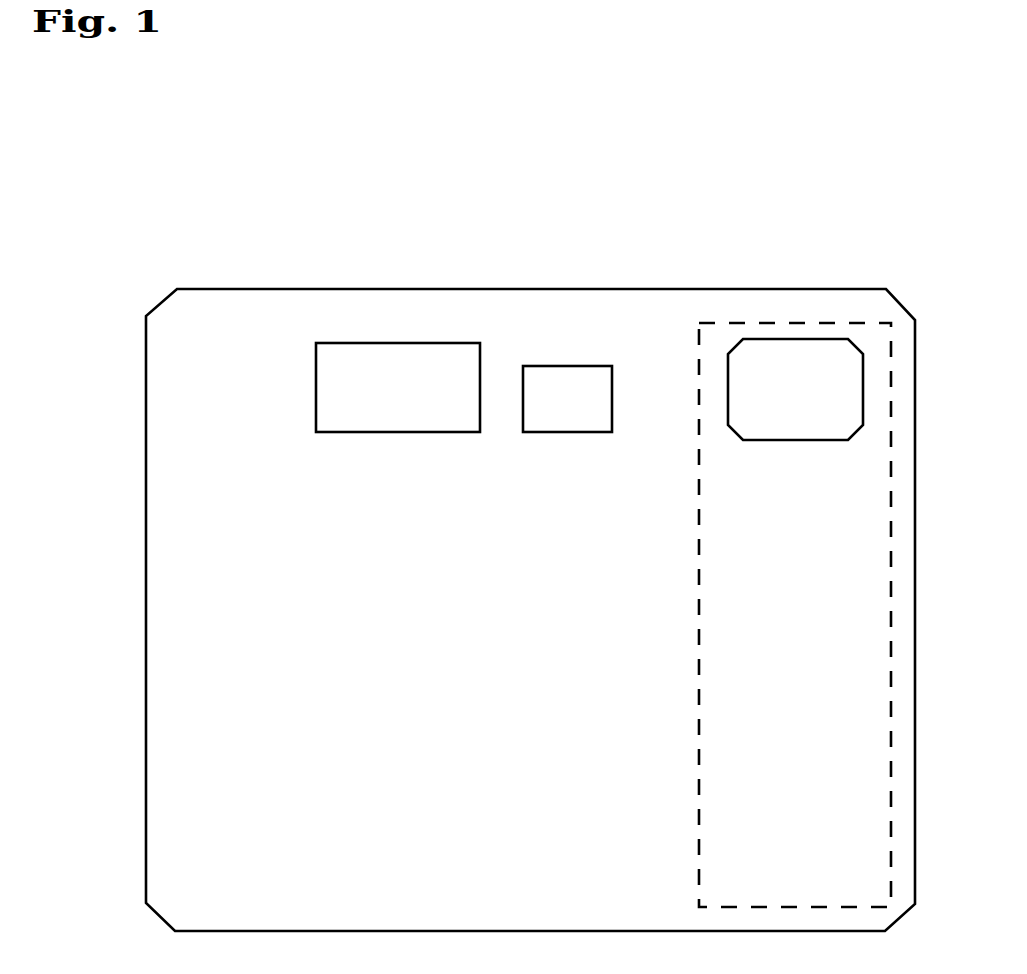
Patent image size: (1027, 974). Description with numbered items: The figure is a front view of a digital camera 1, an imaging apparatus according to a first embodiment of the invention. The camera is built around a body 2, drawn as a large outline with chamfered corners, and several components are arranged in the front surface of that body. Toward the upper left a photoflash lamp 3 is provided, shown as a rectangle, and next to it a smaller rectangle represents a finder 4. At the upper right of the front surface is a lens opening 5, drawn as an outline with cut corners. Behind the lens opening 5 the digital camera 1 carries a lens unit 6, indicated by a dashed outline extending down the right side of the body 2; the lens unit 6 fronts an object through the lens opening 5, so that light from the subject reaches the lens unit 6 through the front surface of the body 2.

The digital camera 1 is at (221, 245).
The body 2 is at (293, 285).
The photoflash lamp 3 is at (396, 343).
The finder 4 is at (566, 366).
The lens opening 5 is at (776, 339).
The lens unit 6 is at (816, 323).